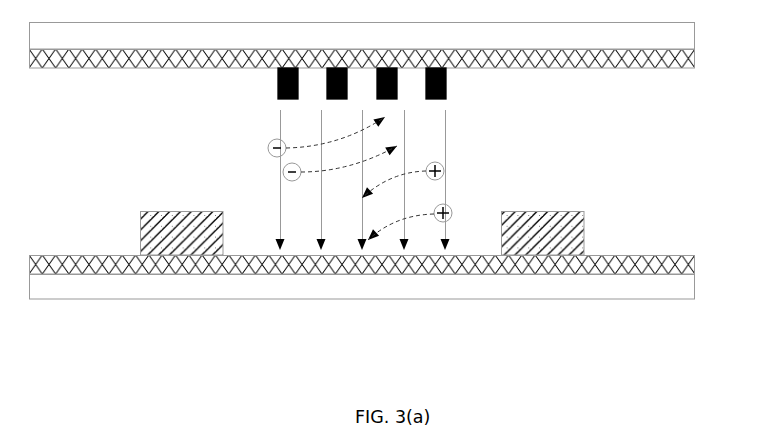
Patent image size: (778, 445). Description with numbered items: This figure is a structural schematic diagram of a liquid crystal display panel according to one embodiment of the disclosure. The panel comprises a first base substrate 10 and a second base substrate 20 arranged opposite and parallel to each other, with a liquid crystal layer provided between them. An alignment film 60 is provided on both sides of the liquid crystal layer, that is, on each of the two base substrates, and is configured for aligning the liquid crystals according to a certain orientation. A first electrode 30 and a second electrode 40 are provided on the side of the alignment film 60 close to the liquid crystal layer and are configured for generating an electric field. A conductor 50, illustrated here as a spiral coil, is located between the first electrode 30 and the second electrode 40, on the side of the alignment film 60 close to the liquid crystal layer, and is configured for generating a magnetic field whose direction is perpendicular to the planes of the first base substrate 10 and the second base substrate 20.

The first base substrate 10 is at (640, 32).
The alignment film 60 is at (695, 60).
The conductor 50 is at (446, 84).
The second base substrate 20 is at (638, 288).
The first electrode 30 is at (168, 232).
The second electrode 40 is at (515, 232).